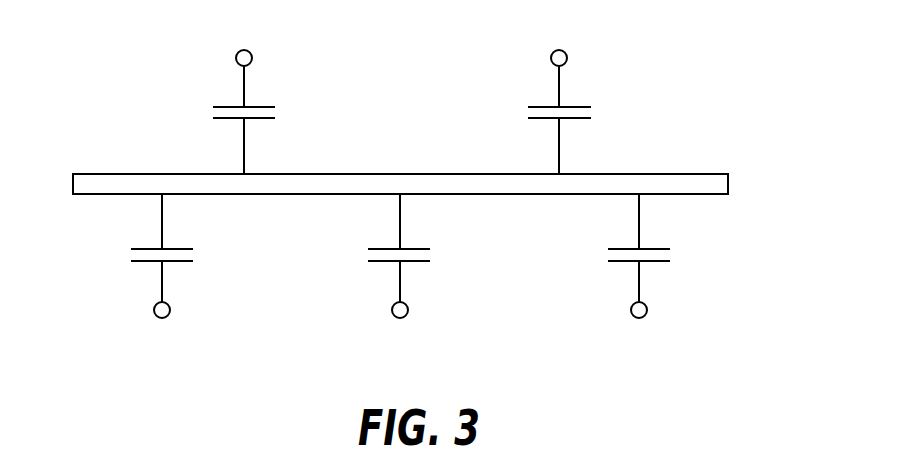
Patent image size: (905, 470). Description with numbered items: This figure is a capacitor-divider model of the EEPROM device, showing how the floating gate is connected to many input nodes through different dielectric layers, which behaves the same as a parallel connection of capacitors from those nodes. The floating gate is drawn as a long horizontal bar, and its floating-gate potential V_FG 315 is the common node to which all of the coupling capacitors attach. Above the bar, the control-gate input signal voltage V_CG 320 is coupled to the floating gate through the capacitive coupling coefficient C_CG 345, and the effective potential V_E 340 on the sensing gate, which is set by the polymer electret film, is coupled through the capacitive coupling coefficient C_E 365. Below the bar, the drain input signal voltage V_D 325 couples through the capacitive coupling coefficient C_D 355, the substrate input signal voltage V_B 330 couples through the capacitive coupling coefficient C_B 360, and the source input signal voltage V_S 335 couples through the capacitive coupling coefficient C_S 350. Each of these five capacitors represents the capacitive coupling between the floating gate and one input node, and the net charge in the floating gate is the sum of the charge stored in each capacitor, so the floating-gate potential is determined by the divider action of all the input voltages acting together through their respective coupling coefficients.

The floating-gate potential V_FG 315 is at (50, 198).
The control-gate input signal voltage V_CG 320 is at (226, 31).
The drain input signal voltage V_D 325 is at (147, 338).
The substrate input signal voltage V_B 330 is at (386, 338).
The source input signal voltage V_S 335 is at (624, 338).
The sensing gate effective potential V_E 340 is at (549, 31).
The control-gate capacitive coupling coefficient C_CG 345 is at (257, 107).
The source capacitive coupling coefficient C_S 350 is at (652, 249).
The drain capacitive coupling coefficient C_D 355 is at (175, 249).
The substrate capacitive coupling coefficient C_B 360 is at (413, 249).
The sensing gate capacitive coupling coefficient C_E 365 is at (572, 107).